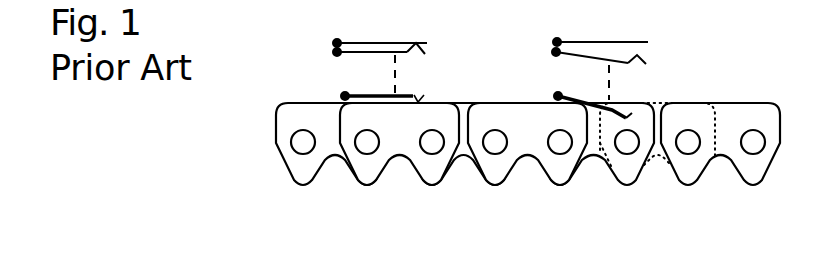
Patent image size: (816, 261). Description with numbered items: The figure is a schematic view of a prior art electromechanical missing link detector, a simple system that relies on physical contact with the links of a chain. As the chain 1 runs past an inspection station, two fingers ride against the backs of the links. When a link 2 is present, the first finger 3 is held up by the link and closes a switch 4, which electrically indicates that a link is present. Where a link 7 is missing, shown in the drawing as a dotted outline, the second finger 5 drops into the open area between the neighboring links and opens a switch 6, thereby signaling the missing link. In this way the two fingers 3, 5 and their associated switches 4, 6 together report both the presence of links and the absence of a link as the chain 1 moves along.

The chain 1 is at (298, 95).
The link 2 is at (365, 161).
The finger 3 is at (407, 92).
The switch 4 is at (330, 45).
The finger 5 is at (623, 105).
The switch 6 is at (553, 43).
The missing link 7 is at (662, 102).